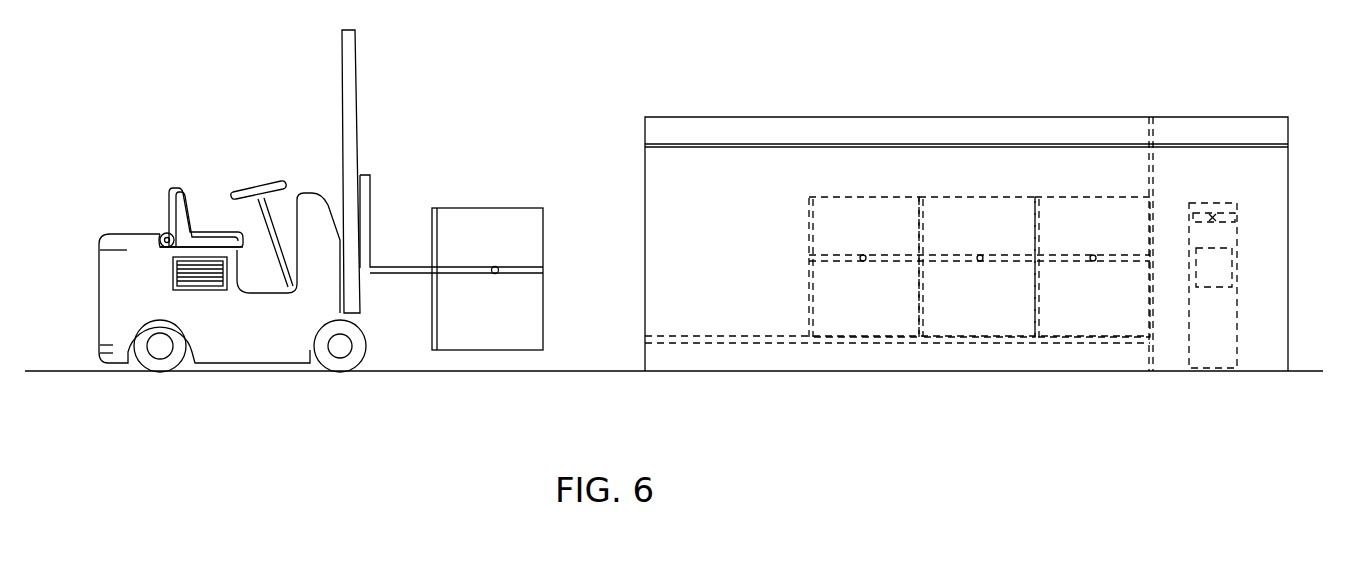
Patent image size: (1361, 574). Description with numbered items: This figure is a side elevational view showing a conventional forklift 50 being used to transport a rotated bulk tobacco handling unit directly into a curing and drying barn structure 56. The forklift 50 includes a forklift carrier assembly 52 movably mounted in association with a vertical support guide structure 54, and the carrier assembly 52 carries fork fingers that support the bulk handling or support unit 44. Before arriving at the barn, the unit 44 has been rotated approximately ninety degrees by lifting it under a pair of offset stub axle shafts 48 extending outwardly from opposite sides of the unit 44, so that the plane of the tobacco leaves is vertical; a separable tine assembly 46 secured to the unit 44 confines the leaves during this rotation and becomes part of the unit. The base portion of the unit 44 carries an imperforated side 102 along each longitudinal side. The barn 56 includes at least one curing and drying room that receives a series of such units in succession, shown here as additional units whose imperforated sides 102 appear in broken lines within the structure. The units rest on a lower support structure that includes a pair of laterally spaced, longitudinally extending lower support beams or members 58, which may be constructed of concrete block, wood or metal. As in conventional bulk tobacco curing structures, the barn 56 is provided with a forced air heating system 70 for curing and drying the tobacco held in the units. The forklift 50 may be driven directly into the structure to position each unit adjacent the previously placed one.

The bulk handling or support unit 44 is at (541, 203).
The separable tine assembly 46 is at (438, 205).
The stub axle shafts 48 is at (523, 253).
The forklift 50 is at (181, 162).
The forklift carrier assembly 52 is at (367, 250).
The vertical support guide structure 54 is at (352, 153).
The curing and drying barn structure 56 is at (831, 113).
The lower support beams or members 58 is at (755, 360).
The forced air heating system 70 is at (1247, 273).
The imperforated side 102 is at (508, 327).